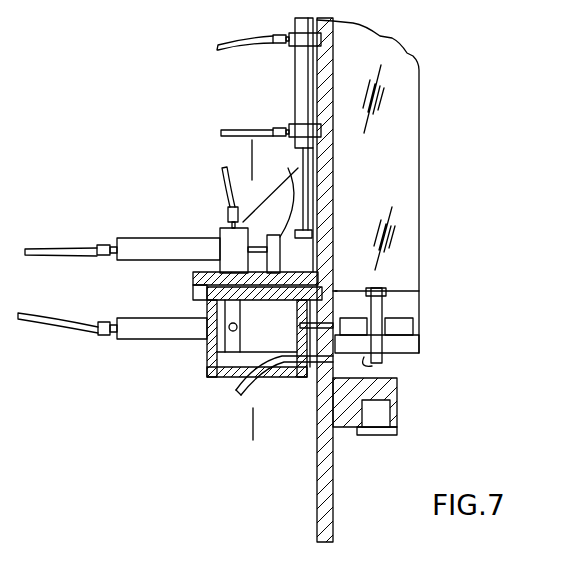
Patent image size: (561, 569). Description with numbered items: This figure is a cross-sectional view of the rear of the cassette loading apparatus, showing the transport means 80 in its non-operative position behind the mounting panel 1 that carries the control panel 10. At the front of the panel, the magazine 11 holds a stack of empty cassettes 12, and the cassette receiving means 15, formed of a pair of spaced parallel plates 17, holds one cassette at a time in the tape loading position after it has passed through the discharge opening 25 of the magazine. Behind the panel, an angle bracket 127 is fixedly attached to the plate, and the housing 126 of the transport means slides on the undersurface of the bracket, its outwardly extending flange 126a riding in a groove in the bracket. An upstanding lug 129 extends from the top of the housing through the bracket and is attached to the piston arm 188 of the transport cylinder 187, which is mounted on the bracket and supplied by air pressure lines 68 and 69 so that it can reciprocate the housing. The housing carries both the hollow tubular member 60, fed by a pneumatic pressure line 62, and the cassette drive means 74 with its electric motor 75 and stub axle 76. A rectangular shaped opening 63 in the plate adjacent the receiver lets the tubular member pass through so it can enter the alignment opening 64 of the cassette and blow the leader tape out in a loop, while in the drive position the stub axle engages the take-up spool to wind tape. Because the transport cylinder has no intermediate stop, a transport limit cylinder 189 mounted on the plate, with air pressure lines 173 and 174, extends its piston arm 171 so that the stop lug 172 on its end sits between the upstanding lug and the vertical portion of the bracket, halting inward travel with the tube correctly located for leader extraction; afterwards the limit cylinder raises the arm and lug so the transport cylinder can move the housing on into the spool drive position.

The mounting panel 1 is at (334, 502).
The control panel 10 is at (248, 150).
The magazine 11 is at (420, 201).
The cassette 12 is at (378, 362).
The cassette receiving means 15 is at (416, 291).
The plates 17 is at (362, 308).
The discharge opening 25 is at (410, 326).
The tubular member 60 is at (318, 373).
The pneumatic pressure line 62 is at (240, 394).
The rectangular shaped opening 63 is at (335, 295).
The alignment opening 64 is at (372, 367).
The air pressure line 68 is at (64, 247).
The air pressure line 69 is at (227, 199).
The cassette drive means 74 is at (258, 346).
The electric motor 75 is at (268, 348).
The stub axle 76 is at (337, 291).
The transport means 80 is at (200, 376).
The housing 126 is at (230, 380).
The flange 126a is at (193, 293).
The angle bracket 127 is at (200, 276).
The upstanding lug 129 is at (278, 195).
The piston arm 171 is at (309, 181).
The stop lug 172 is at (322, 220).
The air pressure line 173 is at (237, 128).
The air pressure line 174 is at (231, 38).
The transport cylinder 187 is at (145, 238).
The piston arm 188 is at (258, 245).
The transport limit cylinder 189 is at (295, 79).